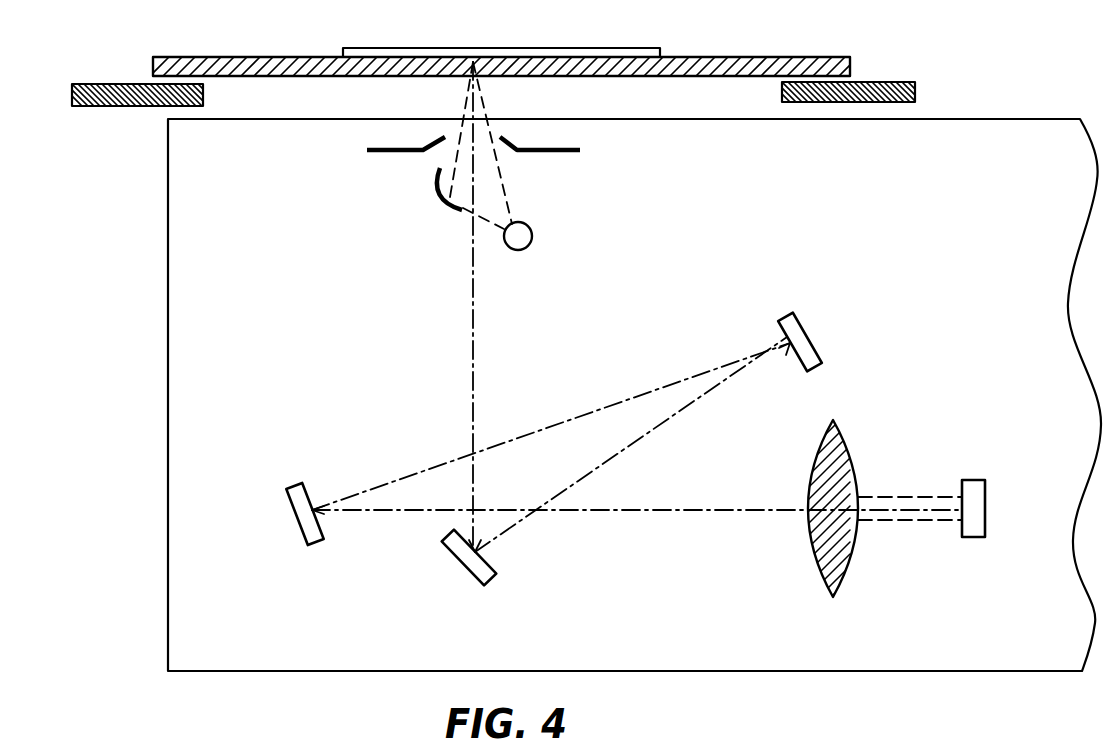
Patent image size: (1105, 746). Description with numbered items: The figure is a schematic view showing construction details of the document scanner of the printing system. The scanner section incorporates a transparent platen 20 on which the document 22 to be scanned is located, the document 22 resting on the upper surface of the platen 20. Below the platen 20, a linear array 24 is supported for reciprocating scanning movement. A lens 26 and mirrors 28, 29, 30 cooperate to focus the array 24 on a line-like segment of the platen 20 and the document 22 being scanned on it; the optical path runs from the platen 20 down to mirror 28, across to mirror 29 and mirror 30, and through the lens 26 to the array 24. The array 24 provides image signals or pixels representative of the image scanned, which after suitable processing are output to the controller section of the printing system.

The transparent platen 20 is at (267, 77).
The document 22 is at (555, 47).
The linear array 24 is at (973, 480).
The lens 26 is at (848, 566).
The mirror 28 is at (473, 577).
The mirror 29 is at (812, 334).
The mirror 30 is at (300, 526).